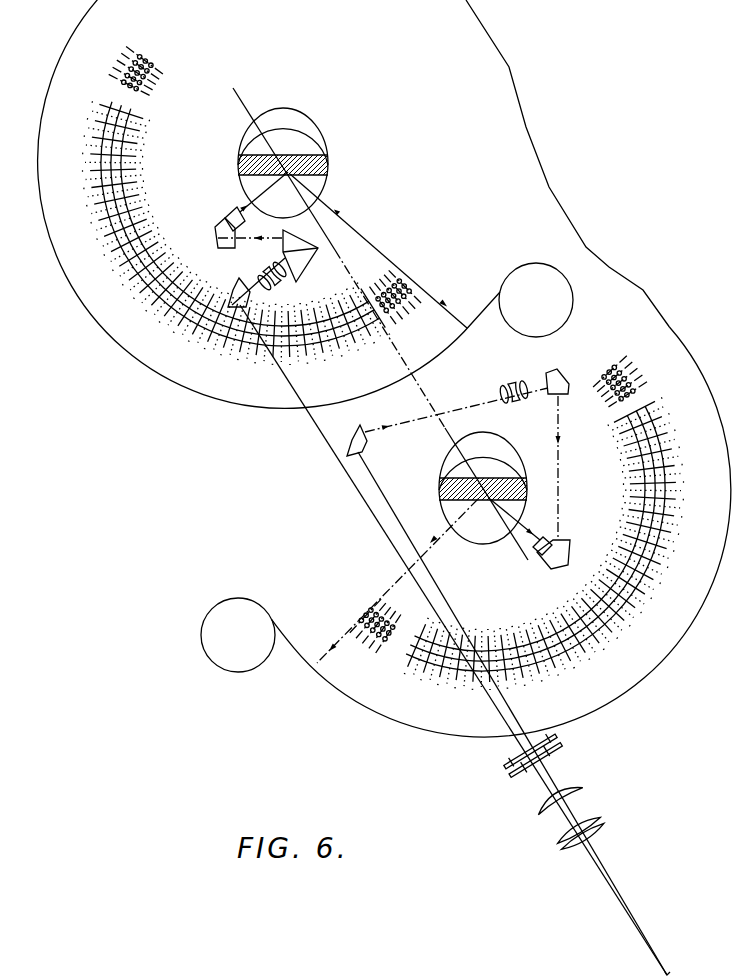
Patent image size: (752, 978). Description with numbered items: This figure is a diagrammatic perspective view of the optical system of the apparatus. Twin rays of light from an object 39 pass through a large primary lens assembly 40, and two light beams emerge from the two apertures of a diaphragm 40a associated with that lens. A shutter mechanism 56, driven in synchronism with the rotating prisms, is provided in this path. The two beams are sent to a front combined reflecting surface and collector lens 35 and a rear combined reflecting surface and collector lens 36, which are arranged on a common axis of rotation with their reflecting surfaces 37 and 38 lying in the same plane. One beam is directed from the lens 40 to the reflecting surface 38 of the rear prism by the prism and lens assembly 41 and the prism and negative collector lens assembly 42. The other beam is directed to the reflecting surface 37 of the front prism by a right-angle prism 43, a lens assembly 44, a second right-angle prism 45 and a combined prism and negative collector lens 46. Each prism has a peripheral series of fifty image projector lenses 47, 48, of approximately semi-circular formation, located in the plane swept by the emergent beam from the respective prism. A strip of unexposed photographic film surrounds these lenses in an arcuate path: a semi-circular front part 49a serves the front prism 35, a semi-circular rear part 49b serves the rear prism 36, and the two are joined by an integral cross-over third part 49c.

The front combined reflecting surface and collector lens 35 is at (505, 449).
The rear combined reflecting surface and collector lens 36 is at (306, 124).
The reflecting surface 37 is at (441, 497).
The reflecting surface 38 is at (321, 161).
The object 39 is at (679, 970).
The primary lens assembly 40 is at (602, 818).
The diaphragm 40a is at (510, 780).
The prism and lens assembly 41 is at (275, 284).
The prism and negative collector lens assembly 42 is at (218, 226).
The right-angle prism 43 is at (361, 426).
The lens assembly 44 is at (514, 382).
The right-angle prism 45 is at (557, 372).
The combined prism and negative collector lens 46 is at (571, 548).
The image projector lenses 47 is at (633, 366).
The image projector lenses 48 is at (143, 50).
The front part of film strip 49a is at (640, 677).
The rear part of film strip 49b is at (150, 380).
The cross-over third part of film strip 49c is at (609, 268).
The shutter mechanism 56 is at (500, 767).